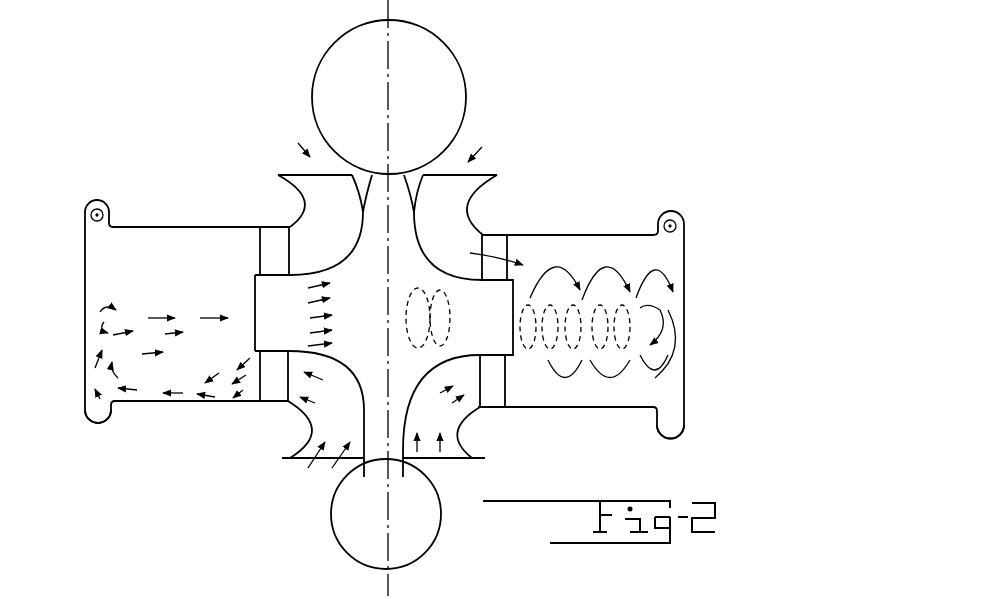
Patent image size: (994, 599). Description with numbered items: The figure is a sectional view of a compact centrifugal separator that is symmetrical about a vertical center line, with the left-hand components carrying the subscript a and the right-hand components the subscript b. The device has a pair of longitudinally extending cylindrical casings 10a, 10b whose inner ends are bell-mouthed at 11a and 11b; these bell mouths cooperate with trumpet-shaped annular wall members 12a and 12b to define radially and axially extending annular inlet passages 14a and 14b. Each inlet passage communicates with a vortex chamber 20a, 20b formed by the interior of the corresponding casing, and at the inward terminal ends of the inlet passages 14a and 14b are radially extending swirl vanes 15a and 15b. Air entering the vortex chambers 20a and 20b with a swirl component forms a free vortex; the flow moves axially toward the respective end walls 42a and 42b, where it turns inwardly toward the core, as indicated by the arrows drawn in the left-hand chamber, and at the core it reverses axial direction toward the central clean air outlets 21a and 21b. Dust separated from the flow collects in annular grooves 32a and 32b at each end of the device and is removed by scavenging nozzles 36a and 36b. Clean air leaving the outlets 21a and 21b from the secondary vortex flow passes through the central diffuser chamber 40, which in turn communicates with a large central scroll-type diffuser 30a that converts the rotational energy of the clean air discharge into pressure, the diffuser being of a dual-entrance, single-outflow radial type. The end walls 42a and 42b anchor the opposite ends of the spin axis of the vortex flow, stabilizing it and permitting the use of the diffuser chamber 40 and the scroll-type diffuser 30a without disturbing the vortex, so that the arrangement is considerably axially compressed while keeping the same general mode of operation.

The scroll-type diffuser 30a is at (318, 72).
The bell-mouthed inner end 11a is at (302, 193).
The bell-mouthed inner end 11b is at (470, 198).
The annular inlet passage 14a is at (328, 210).
The annular inlet passage 14b is at (442, 210).
The trumpet-shaped annular wall member 12a is at (334, 252).
The trumpet-shaped annular wall member 12b is at (419, 243).
The swirl vanes 15a is at (268, 243).
The swirl vanes 15b is at (495, 378).
The central clean air outlet 21a is at (263, 293).
The central clean air outlet 21b is at (508, 298).
The vortex chamber 20a is at (162, 284).
The vortex chamber 20b is at (600, 256).
The central diffuser chamber 40 is at (378, 311).
The end wall 42a is at (84, 268).
The end wall 42b is at (688, 292).
The scavenging nozzle 36a is at (103, 206).
The scavenging nozzle 36b is at (678, 216).
The annular groove 32a is at (97, 424).
The annular groove 32b is at (678, 430).
The cylindrical casing 10a is at (187, 401).
The cylindrical casing 10b is at (550, 409).